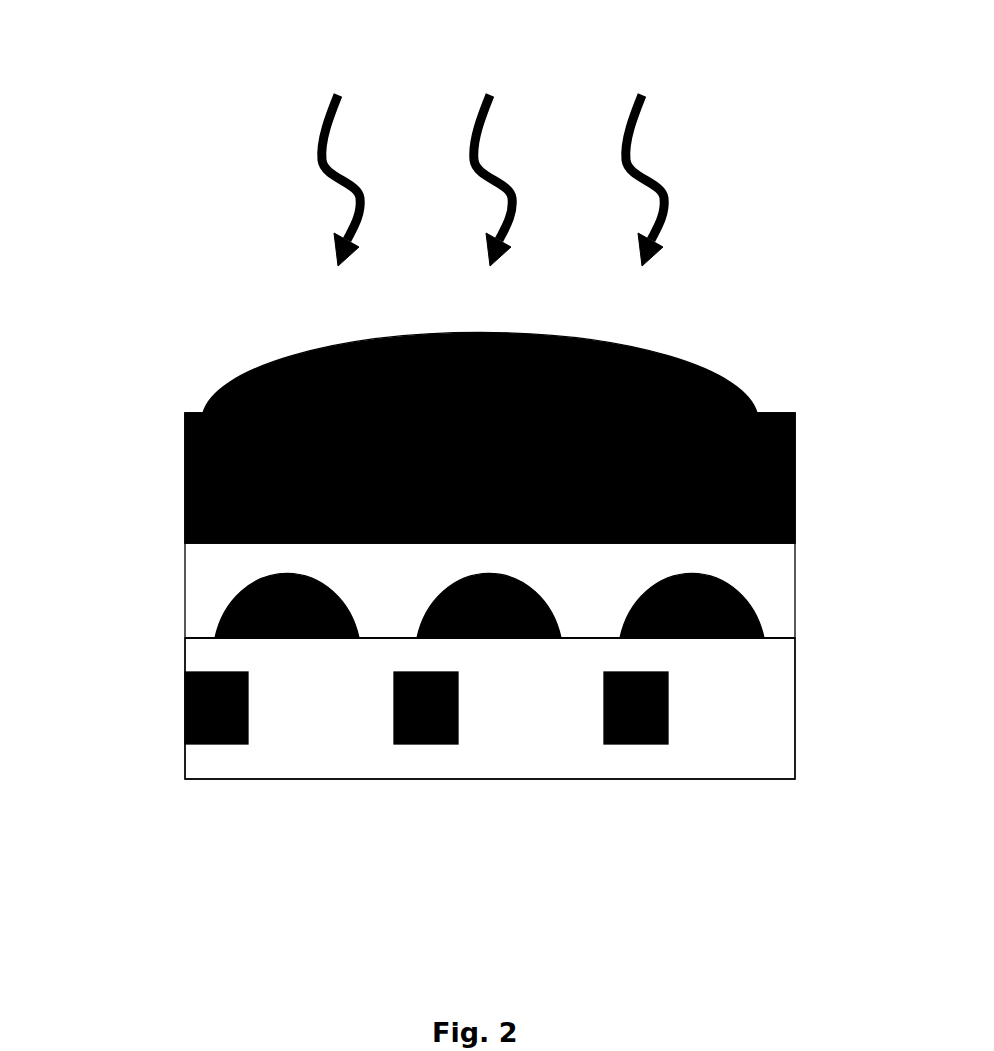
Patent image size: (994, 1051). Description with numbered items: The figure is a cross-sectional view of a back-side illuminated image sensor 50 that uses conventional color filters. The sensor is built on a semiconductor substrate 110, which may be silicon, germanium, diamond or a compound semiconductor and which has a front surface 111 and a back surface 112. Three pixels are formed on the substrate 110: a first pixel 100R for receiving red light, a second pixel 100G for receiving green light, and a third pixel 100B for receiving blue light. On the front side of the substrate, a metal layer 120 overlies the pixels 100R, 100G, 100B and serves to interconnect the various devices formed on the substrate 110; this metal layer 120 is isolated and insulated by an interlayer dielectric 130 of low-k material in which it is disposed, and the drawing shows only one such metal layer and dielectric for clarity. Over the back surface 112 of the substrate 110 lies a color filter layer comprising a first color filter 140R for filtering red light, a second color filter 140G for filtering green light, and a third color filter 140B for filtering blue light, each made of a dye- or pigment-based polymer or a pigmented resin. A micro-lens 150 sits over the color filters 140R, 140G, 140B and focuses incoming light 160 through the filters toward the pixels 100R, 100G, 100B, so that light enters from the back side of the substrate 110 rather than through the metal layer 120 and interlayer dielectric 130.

The back-side illuminated image sensor 50 is at (153, 294).
The light 160 is at (453, 102).
The micro-lens 150 is at (727, 377).
The first color filter 140R is at (202, 432).
The second color filter 140G is at (478, 421).
The third color filter 140B is at (795, 478).
The back surface 112 is at (185, 533).
The semiconductor substrate 110 is at (185, 592).
The first pixel 100R is at (325, 600).
The second pixel 100G is at (530, 593).
The third pixel 100B is at (732, 600).
The metal layer 120 is at (185, 702).
The interlayer dielectric 130 is at (185, 775).
The front surface 111 is at (775, 638).